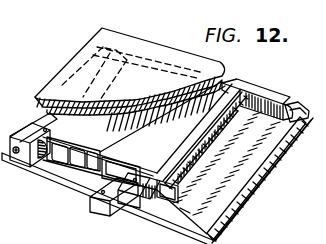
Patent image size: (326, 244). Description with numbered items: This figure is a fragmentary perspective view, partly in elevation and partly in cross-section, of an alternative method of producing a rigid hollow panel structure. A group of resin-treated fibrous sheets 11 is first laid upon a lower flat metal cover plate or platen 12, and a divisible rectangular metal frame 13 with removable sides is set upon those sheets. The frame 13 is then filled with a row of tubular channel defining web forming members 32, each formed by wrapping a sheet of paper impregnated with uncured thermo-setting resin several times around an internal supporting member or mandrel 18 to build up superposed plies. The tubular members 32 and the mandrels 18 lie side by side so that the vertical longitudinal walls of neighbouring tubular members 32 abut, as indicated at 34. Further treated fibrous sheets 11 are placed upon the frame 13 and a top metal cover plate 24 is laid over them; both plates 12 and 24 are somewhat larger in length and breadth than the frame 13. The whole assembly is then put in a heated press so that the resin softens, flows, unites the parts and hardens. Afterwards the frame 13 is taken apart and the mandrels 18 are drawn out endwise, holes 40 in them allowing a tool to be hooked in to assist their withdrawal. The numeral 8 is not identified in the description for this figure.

The connector housing 8 is at (60, 153).
The fibrous sheets 11 is at (227, 83).
The lower flat metal cover plate 12 is at (295, 111).
The rectangular metal frame 13 is at (256, 90).
The cavity-defining member 18 is at (122, 218).
The top metal cover plate 24 is at (84, 52).
The tubular channel defining web forming members 32 is at (130, 133).
The abutting walls of adjacent tubular members 34 is at (158, 180).
The holes 40 is at (101, 192).